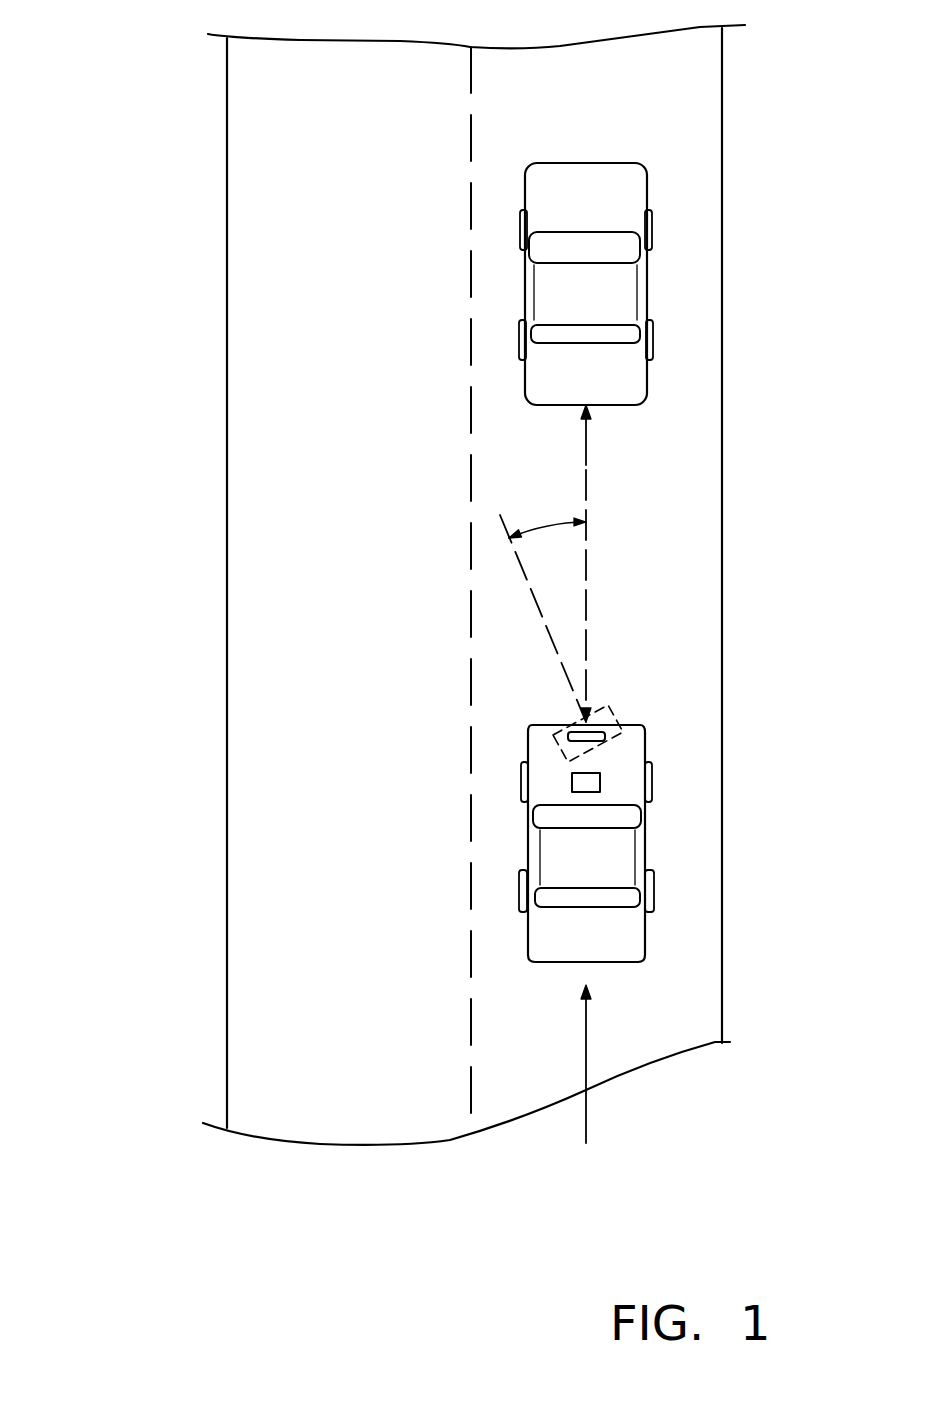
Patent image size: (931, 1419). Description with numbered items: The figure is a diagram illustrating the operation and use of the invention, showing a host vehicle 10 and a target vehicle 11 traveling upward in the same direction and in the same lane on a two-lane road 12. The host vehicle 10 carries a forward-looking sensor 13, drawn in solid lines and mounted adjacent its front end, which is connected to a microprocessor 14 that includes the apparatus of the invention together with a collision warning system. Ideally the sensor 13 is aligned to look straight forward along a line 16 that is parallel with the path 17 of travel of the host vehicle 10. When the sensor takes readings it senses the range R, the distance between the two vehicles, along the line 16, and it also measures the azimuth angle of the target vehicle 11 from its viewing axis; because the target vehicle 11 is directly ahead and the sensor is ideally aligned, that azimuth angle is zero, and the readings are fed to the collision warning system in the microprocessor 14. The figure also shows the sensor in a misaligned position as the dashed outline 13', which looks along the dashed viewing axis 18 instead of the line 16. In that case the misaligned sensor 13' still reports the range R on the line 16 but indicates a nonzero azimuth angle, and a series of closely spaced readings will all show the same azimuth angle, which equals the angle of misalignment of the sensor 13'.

The host vehicle 10 is at (669, 894).
The target vehicle 11 is at (502, 259).
The two-lane road 12 is at (213, 337).
The forward-looking sensor (FLS) 13 is at (670, 728).
The misaligned forward-looking sensor 13' is at (667, 709).
The microprocessor 14 is at (600, 785).
The line 16 is at (586, 549).
The path of travel 17 is at (586, 1117).
The dashed line viewing axis 18 is at (526, 578).